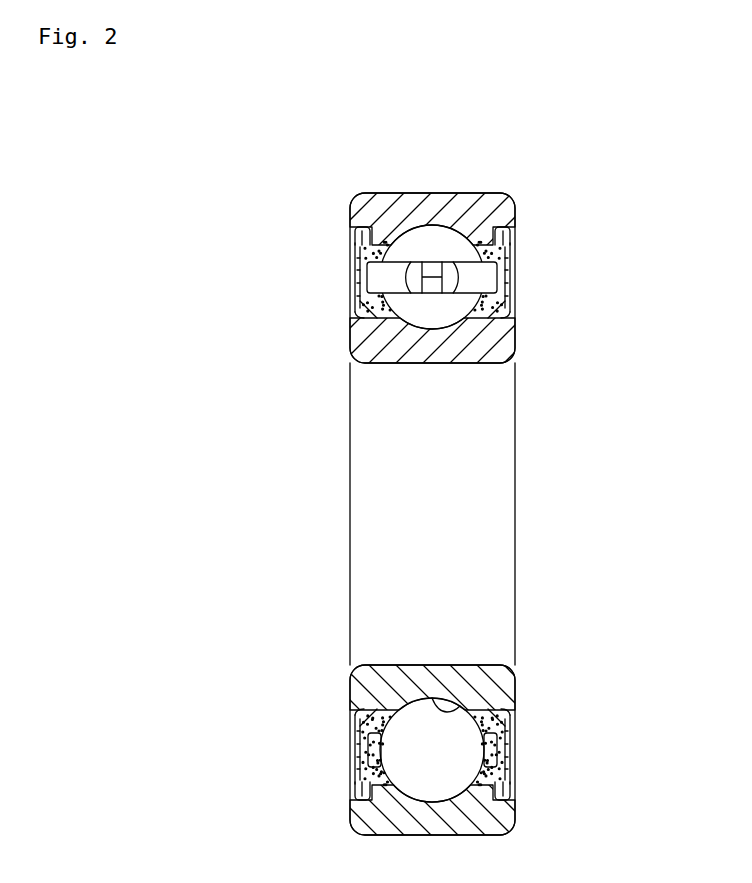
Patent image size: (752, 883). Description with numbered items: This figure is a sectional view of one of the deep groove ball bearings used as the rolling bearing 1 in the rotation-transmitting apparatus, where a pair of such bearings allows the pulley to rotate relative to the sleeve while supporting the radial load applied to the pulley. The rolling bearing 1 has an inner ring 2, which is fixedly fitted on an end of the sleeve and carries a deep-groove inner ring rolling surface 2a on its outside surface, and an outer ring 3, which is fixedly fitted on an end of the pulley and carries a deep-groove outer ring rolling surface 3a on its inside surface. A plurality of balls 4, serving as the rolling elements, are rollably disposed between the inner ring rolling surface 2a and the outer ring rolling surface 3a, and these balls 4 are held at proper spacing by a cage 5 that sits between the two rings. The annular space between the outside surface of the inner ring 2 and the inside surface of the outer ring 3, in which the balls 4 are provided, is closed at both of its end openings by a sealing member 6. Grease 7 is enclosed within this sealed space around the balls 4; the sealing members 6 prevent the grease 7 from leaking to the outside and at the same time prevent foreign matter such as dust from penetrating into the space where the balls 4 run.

The rolling bearing 1 is at (541, 213).
The inner ring 2 is at (378, 343).
The inner ring rolling surface 2a is at (440, 703).
The outer ring 3 is at (373, 216).
The outer ring rolling surface 3a is at (393, 785).
The ball 4 is at (437, 763).
The cage 5 is at (375, 278).
The sealing member 6 is at (510, 258).
The grease 7 is at (510, 247).